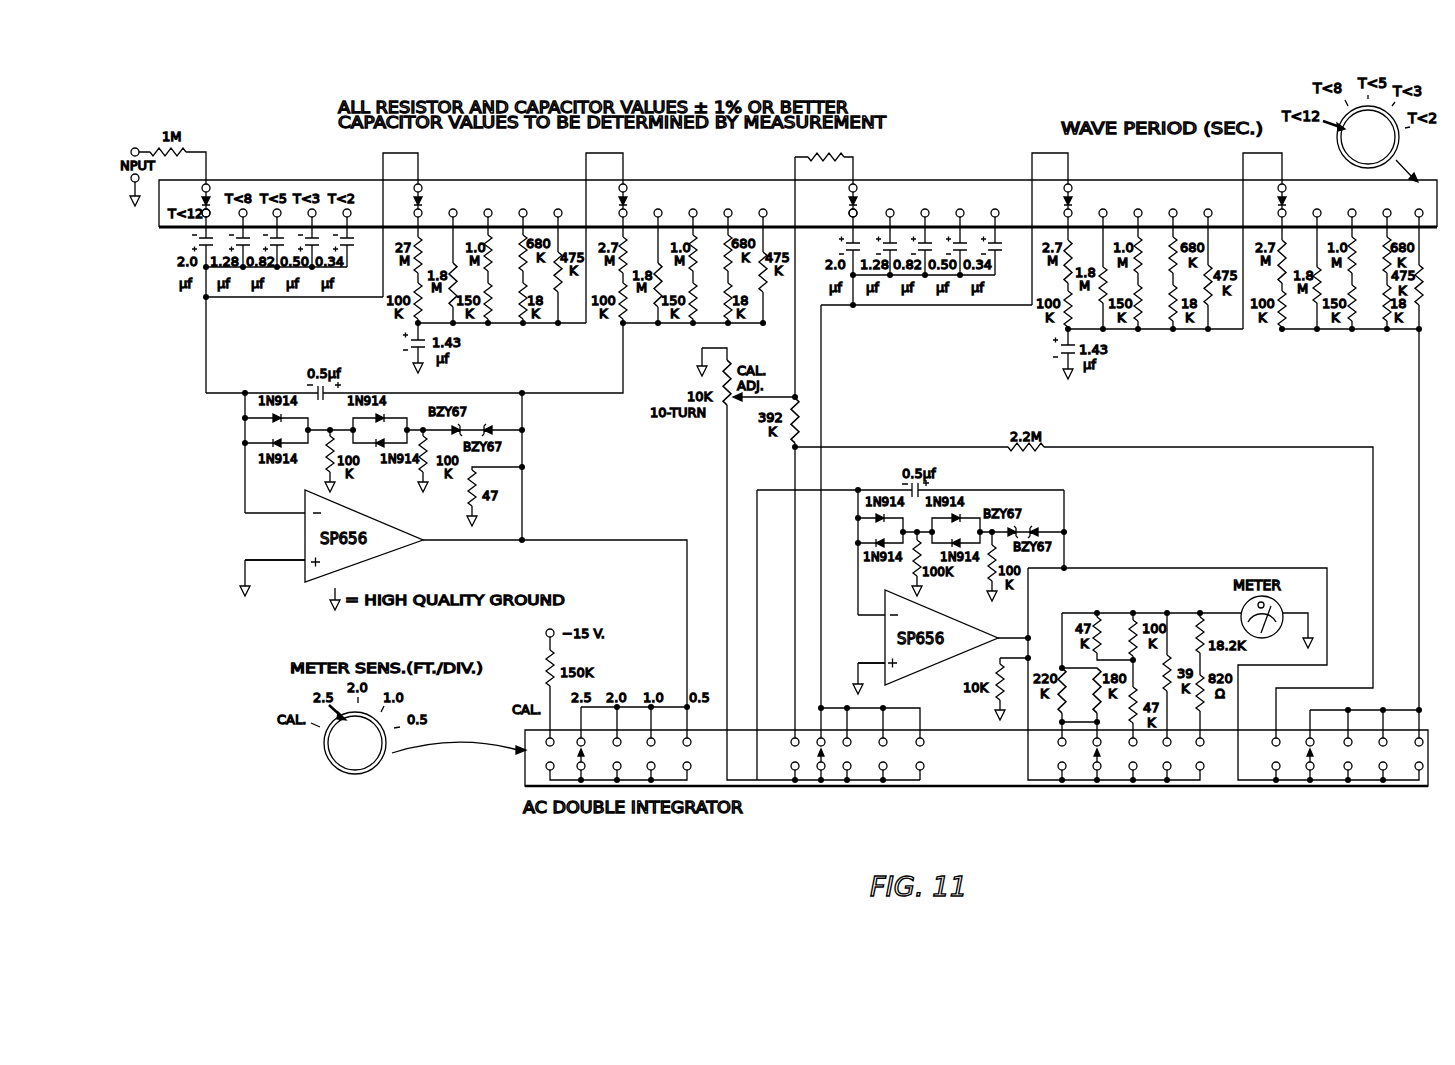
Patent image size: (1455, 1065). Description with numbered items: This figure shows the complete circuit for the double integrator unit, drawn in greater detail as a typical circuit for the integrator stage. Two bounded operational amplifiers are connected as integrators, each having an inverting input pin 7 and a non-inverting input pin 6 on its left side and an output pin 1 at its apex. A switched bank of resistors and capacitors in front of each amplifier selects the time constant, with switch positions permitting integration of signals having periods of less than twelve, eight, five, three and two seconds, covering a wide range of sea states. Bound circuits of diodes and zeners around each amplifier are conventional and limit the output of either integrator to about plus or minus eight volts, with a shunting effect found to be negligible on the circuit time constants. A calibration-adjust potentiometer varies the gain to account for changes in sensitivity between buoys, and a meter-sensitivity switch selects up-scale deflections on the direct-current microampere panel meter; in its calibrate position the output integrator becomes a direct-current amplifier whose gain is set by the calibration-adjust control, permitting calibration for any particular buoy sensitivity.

The inverting input pin of SP656 amplifier 7 is at (565, 555).
The non-inverting input pin of SP656 amplifier 6 is at (565, 604).
The output pin of SP656 amplifier 1 is at (725, 629).